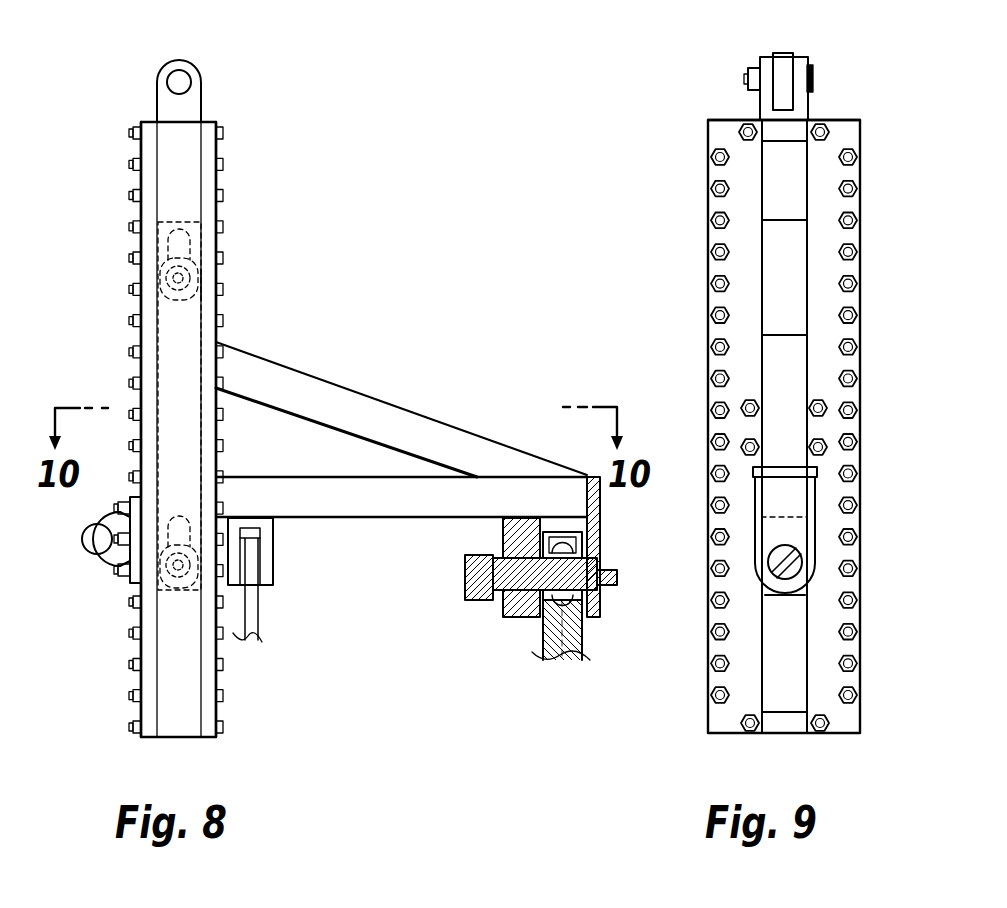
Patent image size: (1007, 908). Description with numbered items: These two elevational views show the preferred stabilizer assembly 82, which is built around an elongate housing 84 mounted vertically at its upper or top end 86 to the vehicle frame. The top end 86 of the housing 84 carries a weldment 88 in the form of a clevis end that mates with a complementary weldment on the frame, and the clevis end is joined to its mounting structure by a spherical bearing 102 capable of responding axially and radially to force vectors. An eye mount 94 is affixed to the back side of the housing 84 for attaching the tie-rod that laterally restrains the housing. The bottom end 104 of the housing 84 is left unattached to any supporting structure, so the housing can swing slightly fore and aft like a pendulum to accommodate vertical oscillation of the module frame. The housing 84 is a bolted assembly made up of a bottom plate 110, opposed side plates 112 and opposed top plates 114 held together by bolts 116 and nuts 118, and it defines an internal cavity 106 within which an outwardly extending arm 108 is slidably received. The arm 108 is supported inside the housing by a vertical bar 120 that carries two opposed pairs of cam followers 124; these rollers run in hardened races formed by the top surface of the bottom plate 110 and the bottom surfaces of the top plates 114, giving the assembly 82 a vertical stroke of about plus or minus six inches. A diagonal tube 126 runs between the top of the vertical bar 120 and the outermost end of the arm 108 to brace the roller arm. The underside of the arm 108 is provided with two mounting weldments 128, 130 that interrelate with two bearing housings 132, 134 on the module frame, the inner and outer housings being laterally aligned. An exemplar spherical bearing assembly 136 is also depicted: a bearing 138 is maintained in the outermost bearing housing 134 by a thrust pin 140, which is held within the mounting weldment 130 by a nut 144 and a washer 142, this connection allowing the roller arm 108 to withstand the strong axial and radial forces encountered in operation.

In FIG. 8, the stabilizer assembly 82 is at (106, 192).
In FIG. 9, the elongate housing 84 is at (710, 207).
In FIG. 9, the top end of housing 86 is at (730, 120).
In FIG. 8, the weldment 88 is at (188, 98).
In FIG. 8, the eye mount 94 is at (107, 563).
In FIG. 9, the spherical bearing 102 is at (810, 67).
In FIG. 9, the bottom end of housing 104 is at (787, 727).
In FIG. 9, the internal cavity 106 is at (787, 282).
In FIG. 8, the arm 108 is at (378, 492).
In FIG. 8, the bottom plate 110 is at (147, 278).
In FIG. 8, the side plates 112 is at (177, 193).
In FIG. 8, the top plates 114 is at (203, 288).
In FIG. 9, the top plates 114 is at (743, 303).
In FIG. 8, the bolts 116 is at (222, 127).
In FIG. 8, the nuts 118 is at (137, 127).
In FIG. 8, the vertical bar 120 is at (177, 343).
In FIG. 9, the vertical bar 120 is at (783, 395).
In FIG. 8, the cam followers 124 is at (187, 270).
In FIG. 8, the diagonal tube 126 is at (383, 423).
In FIG. 8, the mounting weldment 128 is at (267, 568).
In FIG. 8, the mounting weldment 130 is at (507, 533).
In FIG. 8, the bearing housing 132 is at (252, 618).
In FIG. 8, the bearing housing 134 is at (560, 640).
In FIG. 8, the spherical bearing assembly 136 is at (521, 640).
In FIG. 8, the bearing 138 is at (580, 610).
In FIG. 8, the thrust pin 140 is at (587, 577).
In FIG. 8, the washer 142 is at (498, 597).
In FIG. 8, the nut 144 is at (467, 597).